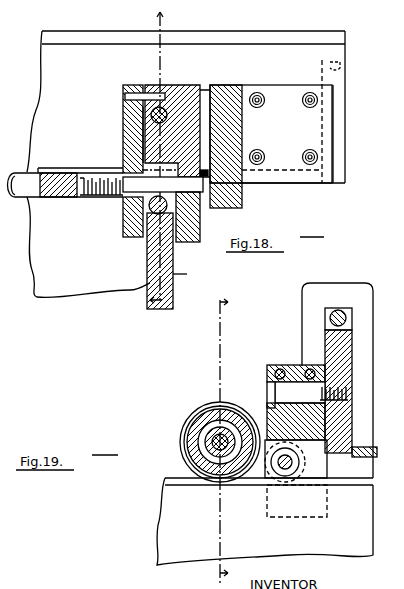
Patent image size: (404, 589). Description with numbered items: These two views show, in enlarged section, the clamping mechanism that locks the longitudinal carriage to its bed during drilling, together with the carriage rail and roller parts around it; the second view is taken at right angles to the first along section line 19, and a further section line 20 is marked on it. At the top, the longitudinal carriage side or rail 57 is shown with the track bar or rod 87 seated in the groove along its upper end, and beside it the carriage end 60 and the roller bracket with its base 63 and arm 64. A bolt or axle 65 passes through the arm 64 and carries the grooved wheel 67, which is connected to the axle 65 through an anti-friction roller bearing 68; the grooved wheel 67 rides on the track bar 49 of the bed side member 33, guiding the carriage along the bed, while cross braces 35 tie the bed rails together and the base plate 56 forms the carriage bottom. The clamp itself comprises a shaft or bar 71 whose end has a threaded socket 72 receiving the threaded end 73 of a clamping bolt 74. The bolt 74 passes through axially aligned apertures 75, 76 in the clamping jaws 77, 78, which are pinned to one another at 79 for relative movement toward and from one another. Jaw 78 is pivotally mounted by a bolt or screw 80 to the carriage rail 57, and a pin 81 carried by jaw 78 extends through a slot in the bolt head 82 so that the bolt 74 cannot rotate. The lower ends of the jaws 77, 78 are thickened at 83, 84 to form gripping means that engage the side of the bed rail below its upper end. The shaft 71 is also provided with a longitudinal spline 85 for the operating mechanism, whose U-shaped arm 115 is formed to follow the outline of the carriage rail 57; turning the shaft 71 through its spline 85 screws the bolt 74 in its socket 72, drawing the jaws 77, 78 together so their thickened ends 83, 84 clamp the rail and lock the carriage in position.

In FIG. 18, the section line 19— 19 is at (166, 158).
In FIG. 19, the section line 20 is at (215, 440).
In FIG. 18, the longitudinal rail or side member 33 is at (189, 274).
In FIG. 19, the longitudinal rail or side member 33 is at (157, 517).
In FIG. 18, the cross brace 35 is at (58, 298).
In FIG. 19, the track bar 49 is at (165, 480).
In FIG. 19, the base plate 56 is at (360, 457).
In FIG. 18, the upstanding side or rail 57 is at (345, 52).
In FIG. 19, the upstanding side or rail 57 is at (352, 360).
In FIG. 18, the end 60 is at (343, 70).
In FIG. 18, the base 63 is at (320, 108).
In FIG. 18, the arm 64 is at (241, 118).
In FIG. 19, the bolt or axle 65 is at (212, 448).
In FIG. 19, the grooved wheel 67 is at (210, 406).
In FIG. 19, the anti-friction roller bearing 68 is at (203, 432).
In FIG. 18, the shaft or bar 71 is at (15, 176).
In FIG. 18, the threaded socket 72 is at (80, 197).
In FIG. 18, the threaded end 73 is at (108, 198).
In FIG. 19, the threaded end 73 is at (300, 465).
In FIG. 18, the clamping bolt 74 is at (178, 230).
In FIG. 19, the clamping bolt 74 is at (310, 368).
In FIG. 18, the aperture 75 is at (127, 228).
In FIG. 18, the aperture 76 is at (170, 187).
In FIG. 18, the clamping jaw 77 is at (123, 138).
In FIG. 18, the clamping jaw 78 is at (204, 97).
In FIG. 19, the clamping jaw 78 is at (291, 367).
In FIG. 18, the pin 79 is at (125, 98).
In FIG. 19, the pin 79 is at (278, 370).
In FIG. 18, the bolt or screw 80 is at (167, 108).
In FIG. 19, the bolt or screw 80 is at (274, 395).
In FIG. 18, the pin 81 is at (208, 172).
In FIG. 19, the pin 81 is at (338, 310).
In FIG. 18, the bolt head 82 is at (242, 190).
In FIG. 18, the thickened lower end 83 is at (150, 243).
In FIG. 18, the thickened lower end 84 is at (178, 232).
In FIG. 18, the longitudinal spline 85 is at (62, 172).
In FIG. 18, the track bar or rod 87 is at (312, 33).
In FIG. 19, the U-shaped arm 115 is at (365, 270).